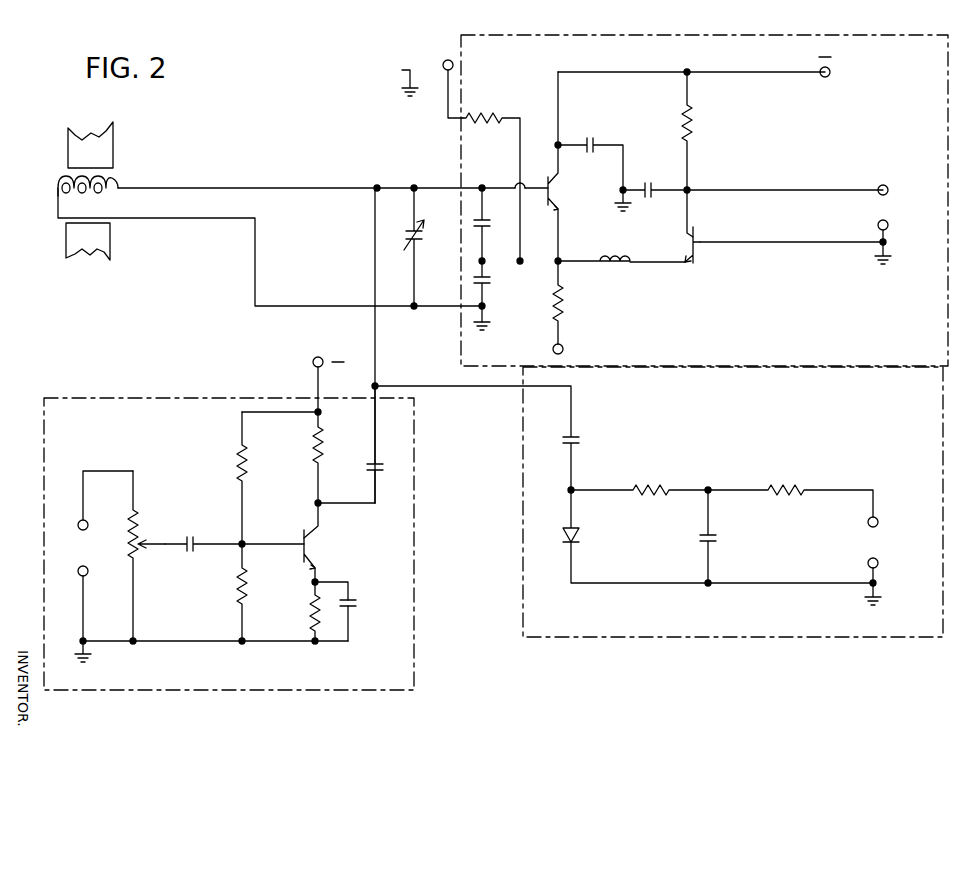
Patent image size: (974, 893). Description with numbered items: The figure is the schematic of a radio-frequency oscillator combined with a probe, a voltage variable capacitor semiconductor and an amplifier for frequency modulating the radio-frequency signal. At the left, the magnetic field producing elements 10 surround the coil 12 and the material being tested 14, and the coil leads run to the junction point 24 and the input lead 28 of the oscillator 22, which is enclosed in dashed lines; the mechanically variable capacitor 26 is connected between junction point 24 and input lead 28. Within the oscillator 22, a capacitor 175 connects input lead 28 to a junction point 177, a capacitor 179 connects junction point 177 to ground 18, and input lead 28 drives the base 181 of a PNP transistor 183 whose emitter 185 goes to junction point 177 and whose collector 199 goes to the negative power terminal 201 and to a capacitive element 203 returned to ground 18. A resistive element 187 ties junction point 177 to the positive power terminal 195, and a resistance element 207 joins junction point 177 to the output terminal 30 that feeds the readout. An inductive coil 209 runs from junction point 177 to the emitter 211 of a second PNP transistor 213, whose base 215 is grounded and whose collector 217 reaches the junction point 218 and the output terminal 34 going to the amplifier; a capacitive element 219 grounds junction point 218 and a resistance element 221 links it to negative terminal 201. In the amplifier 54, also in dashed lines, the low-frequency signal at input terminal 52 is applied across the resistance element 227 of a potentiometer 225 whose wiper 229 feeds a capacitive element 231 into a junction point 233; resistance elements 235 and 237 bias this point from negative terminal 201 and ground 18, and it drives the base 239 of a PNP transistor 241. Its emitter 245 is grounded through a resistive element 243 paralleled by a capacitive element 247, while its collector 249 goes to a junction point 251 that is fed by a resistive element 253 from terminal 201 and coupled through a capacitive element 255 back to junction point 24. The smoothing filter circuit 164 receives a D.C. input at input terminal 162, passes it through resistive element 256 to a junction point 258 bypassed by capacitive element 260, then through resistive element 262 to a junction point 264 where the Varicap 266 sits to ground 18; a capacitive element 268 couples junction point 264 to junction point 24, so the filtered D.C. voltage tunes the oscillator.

The magnetic field producing elements 10 is at (112, 142).
The coil 12 is at (118, 178).
The material being tested 14 is at (58, 186).
The ground 18 is at (486, 325).
The oscillator 22 is at (704, 200).
The junction point 24 is at (377, 185).
The mechanically variable capacitor 26 is at (418, 240).
The input lead 28 is at (445, 186).
The output terminal 30 is at (444, 58).
The output terminal 34 is at (880, 186).
The input terminal 52 is at (80, 520).
The amplifier 54 is at (229, 544).
The input terminal 162 is at (877, 517).
The variable capacitor smoothing filter circuit 164 is at (733, 502).
The capacitor 175 is at (486, 222).
The junction point 177 is at (486, 264).
The capacitor 179 is at (486, 286).
The base 181 is at (546, 186).
The PNP transistor 183 is at (567, 203).
The emitter 185 is at (560, 206).
The resistive element 187 is at (562, 302).
The positive power terminal 195 is at (564, 349).
The collector 199 is at (556, 170).
The negative power terminal 201 is at (830, 72).
The capacitive element 203 is at (595, 142).
The resistance element 207 is at (487, 115).
The inductive coil 209 is at (620, 266).
The emitter 211 is at (688, 264).
The PNP transistor means 213 is at (677, 245).
The base 215 is at (697, 240).
The collector 217 is at (687, 230).
The junction point 218 is at (689, 190).
The capacitive element 219 is at (648, 185).
The resistance element 221 is at (692, 124).
The potentiometer 225 is at (121, 536).
The resistance element 227 is at (141, 522).
The wiper 229 is at (166, 550).
The capacitive element 231 is at (194, 552).
The junction point 233 is at (244, 542).
The resistance element 235 is at (246, 458).
The resistance element 237 is at (238, 582).
The base 239 is at (302, 552).
The PNP transistor 241 is at (323, 557).
The resistive element 243 is at (311, 606).
The emitter 245 is at (316, 562).
The capacitive element 247 is at (354, 600).
The collector 249 is at (306, 532).
The junction point 251 is at (320, 500).
The resistive element 253 is at (321, 446).
The capacitive element 255 is at (376, 474).
The resistive element 256 is at (782, 487).
The junction point 258 is at (711, 487).
The capacitive element 260 is at (716, 534).
The resistive element 262 is at (648, 485).
The junction point 264 is at (568, 490).
The Varicap 266 is at (582, 534).
The capacitive element 268 is at (575, 438).